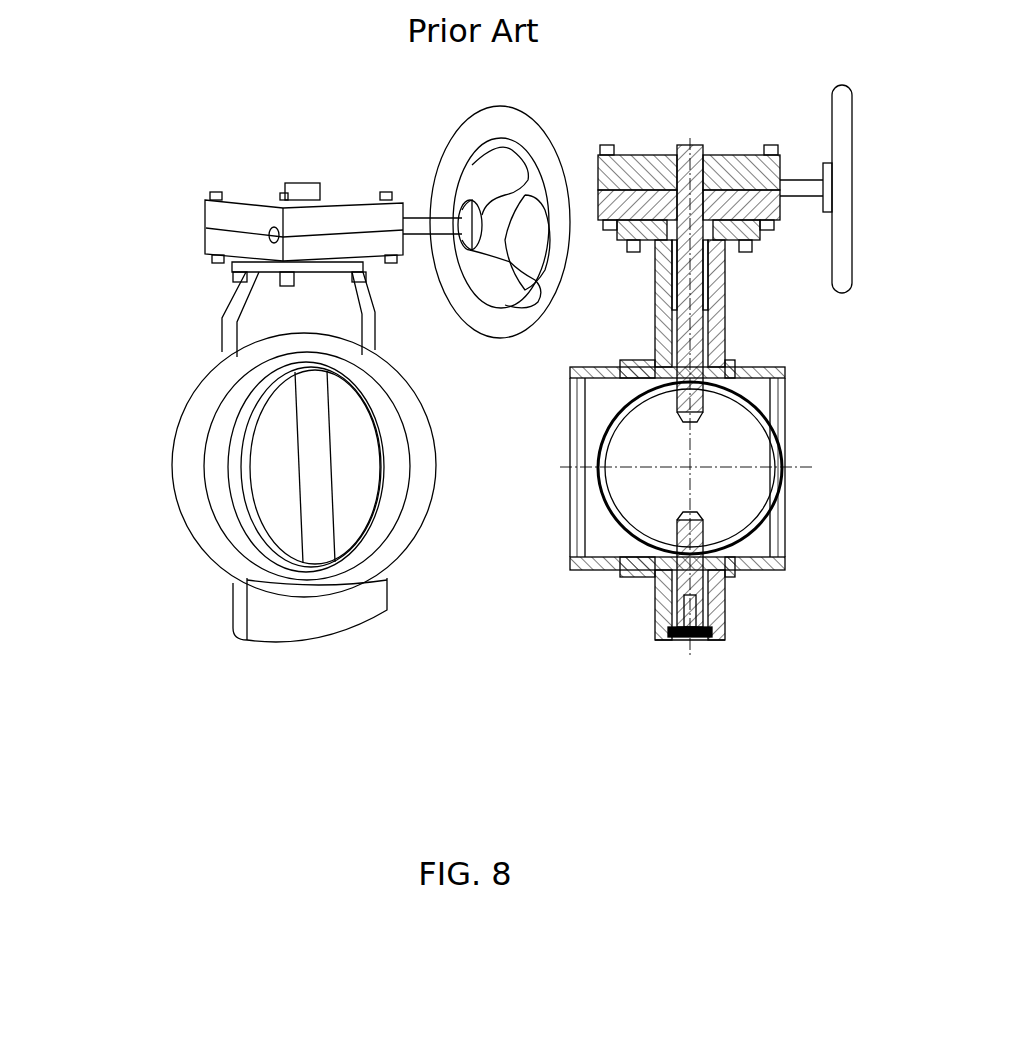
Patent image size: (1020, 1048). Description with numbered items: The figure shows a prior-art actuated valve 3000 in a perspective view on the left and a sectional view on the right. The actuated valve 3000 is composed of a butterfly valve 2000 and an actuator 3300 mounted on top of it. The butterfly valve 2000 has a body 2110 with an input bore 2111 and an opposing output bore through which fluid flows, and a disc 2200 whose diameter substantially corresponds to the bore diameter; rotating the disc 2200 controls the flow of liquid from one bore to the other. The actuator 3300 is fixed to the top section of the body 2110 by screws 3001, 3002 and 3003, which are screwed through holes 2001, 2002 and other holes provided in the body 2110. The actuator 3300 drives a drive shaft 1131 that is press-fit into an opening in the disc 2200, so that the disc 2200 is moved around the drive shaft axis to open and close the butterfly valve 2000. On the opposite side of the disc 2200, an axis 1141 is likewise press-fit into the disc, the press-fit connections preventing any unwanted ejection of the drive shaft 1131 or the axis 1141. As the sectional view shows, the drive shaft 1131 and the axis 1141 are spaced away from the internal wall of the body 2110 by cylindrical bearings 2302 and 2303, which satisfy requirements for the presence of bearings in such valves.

The actuated valve 3000 is at (186, 148).
The actuator 3300 is at (165, 197).
The butterfly valve 2000 is at (165, 631).
The body 2110 is at (408, 548).
The disc 2200 is at (357, 468).
The input bore 2111 is at (370, 502).
The hole 2002 is at (223, 271).
The screw 3002 is at (222, 271).
The screw 3001 is at (282, 285).
The screw 3003 is at (357, 279).
The hole 2001 is at (297, 283).
The drive shaft 1131 is at (688, 140).
The cylindrical bearing 2302 is at (660, 297).
The cylindrical bearing 2303 is at (660, 578).
The axis 1141 is at (727, 607).